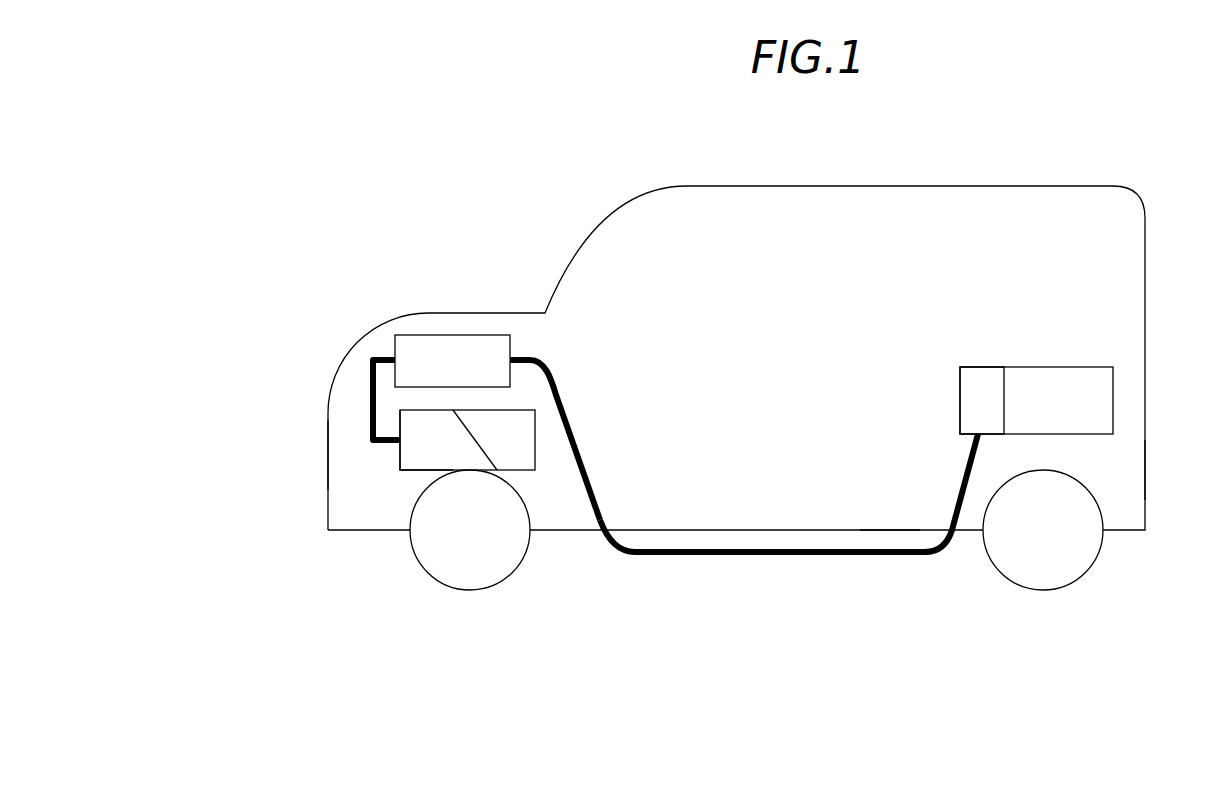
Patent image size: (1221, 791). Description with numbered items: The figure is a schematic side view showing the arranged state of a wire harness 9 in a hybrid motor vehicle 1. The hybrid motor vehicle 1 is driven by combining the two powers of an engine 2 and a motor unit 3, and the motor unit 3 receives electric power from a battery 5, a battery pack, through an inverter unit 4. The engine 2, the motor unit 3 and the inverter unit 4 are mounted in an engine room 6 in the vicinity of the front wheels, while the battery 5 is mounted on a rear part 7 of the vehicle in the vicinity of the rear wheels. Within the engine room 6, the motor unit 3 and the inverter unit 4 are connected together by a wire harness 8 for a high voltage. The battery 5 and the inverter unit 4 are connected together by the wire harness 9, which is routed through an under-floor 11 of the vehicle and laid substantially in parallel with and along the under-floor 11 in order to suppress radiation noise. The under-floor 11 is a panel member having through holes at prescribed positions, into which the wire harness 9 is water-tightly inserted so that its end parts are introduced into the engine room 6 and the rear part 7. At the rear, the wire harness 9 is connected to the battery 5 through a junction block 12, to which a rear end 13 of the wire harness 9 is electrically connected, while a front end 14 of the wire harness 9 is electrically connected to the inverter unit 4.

The hybrid motor vehicle 1 is at (466, 211).
The engine 2 is at (523, 460).
The motor unit 3 is at (412, 460).
The inverter unit 4 is at (427, 347).
The battery 5 is at (1065, 380).
The engine room 6 is at (340, 493).
The rear part 7 is at (1117, 462).
The wire harness for a high voltage 8 is at (362, 385).
The wire harness 9 is at (677, 558).
The under-floor 11 is at (882, 532).
The junction block 12 is at (972, 375).
The rear end 13 is at (960, 462).
The front end 14 is at (540, 363).